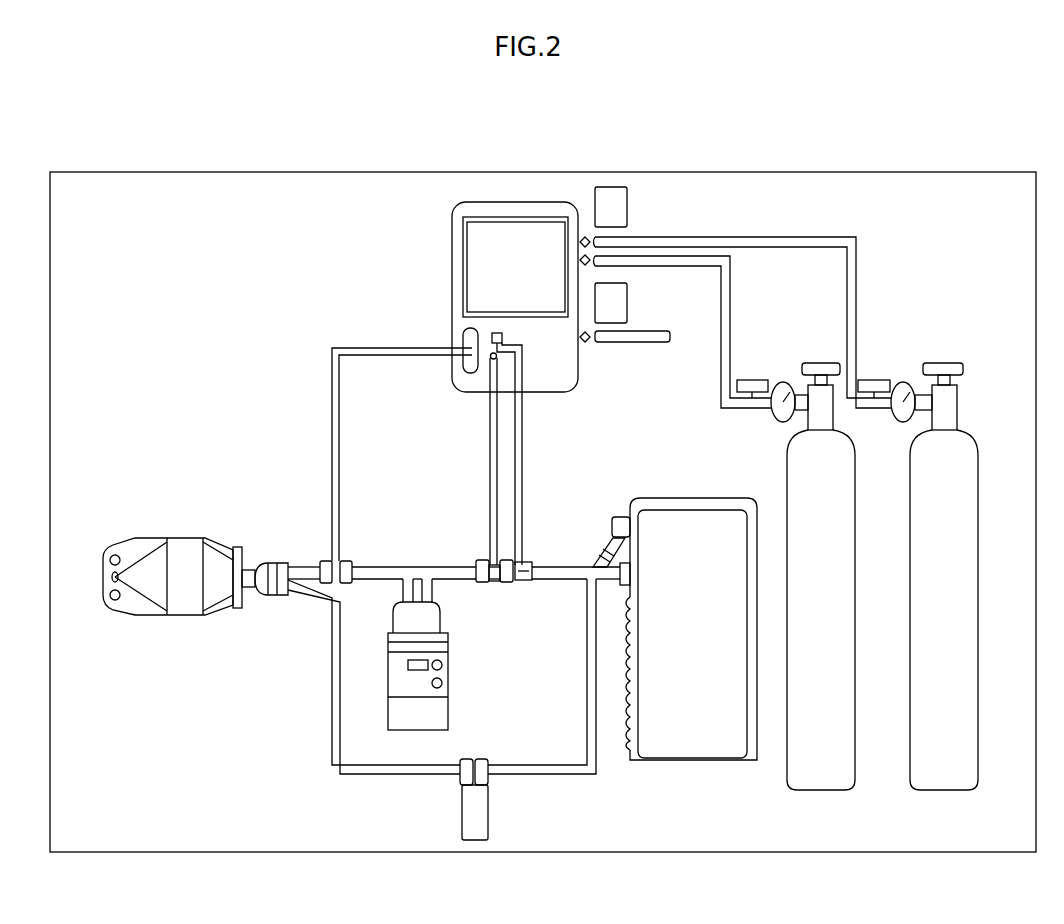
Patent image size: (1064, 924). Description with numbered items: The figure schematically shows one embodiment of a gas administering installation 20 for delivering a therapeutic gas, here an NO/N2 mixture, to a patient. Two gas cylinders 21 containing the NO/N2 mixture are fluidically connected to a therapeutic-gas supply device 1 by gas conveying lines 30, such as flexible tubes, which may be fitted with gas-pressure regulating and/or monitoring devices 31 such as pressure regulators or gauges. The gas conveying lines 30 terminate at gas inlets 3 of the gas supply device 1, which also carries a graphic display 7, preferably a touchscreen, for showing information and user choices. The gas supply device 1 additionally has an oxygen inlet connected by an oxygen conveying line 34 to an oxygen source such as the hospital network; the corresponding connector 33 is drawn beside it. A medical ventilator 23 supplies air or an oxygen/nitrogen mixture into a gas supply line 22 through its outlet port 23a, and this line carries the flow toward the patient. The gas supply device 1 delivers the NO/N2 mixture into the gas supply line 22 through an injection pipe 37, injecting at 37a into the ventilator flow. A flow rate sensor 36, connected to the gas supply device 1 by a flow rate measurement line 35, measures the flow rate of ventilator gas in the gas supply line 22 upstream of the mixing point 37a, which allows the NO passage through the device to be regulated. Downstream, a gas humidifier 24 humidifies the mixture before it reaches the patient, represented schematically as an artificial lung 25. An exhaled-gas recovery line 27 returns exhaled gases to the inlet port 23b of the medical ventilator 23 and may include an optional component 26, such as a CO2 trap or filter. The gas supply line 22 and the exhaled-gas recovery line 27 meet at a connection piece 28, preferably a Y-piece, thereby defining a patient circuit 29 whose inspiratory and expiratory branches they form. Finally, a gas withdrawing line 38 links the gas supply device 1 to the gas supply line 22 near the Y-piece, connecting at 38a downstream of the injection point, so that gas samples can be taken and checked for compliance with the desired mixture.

The therapeutic-gas supply device 1 is at (460, 202).
The gas inlet 3 is at (583, 218).
The graphic display 7 is at (523, 245).
The gas administering installation 20 is at (373, 232).
The gas cylinder 21 is at (811, 774).
The gas supply line 22 is at (373, 567).
The medical ventilator 23 is at (707, 747).
The outlet port 23a is at (631, 524).
The inlet port 23b is at (632, 572).
The gas humidifier 24 is at (430, 718).
The artificial lung 25 is at (183, 592).
The optional component 26 is at (477, 834).
The exhaled-gas recovery line 27 is at (365, 773).
The connection piece 28 is at (270, 594).
The patient circuit 29 is at (300, 762).
The gas conveying line 30 is at (730, 268).
The gas-pressure regulating and/or monitoring device 31 is at (777, 386).
The oxygen connector 33 is at (588, 348).
The oxygen conveying line 34 is at (647, 337).
The flow rate measurement line 35 is at (523, 448).
The flow rate sensor 36 is at (532, 559).
The injection pipe 37 is at (489, 448).
The injection point 37a is at (490, 584).
The gas withdrawing line 38 is at (332, 397).
The withdrawing connection point 38a is at (327, 558).